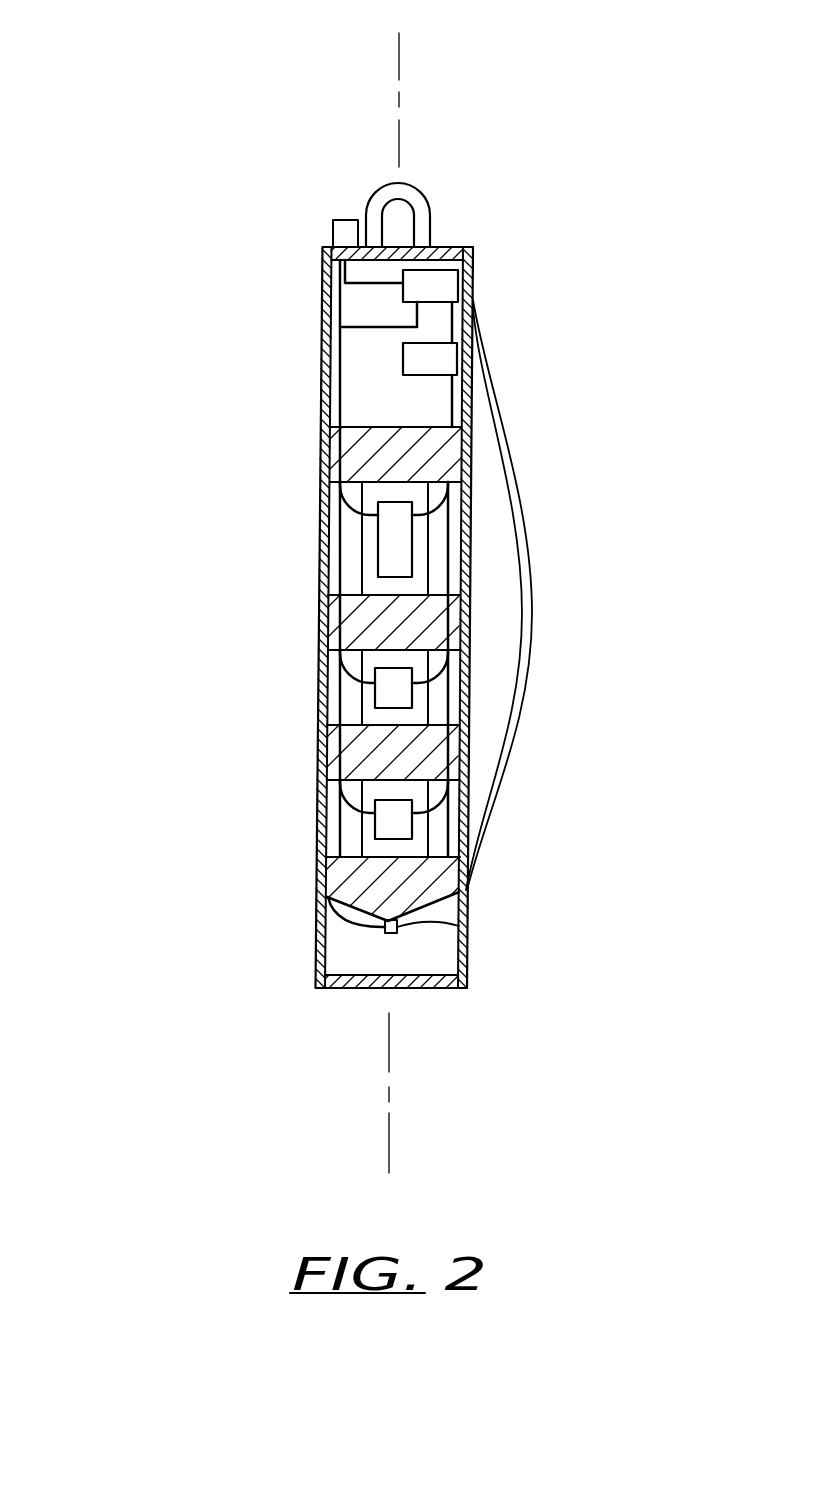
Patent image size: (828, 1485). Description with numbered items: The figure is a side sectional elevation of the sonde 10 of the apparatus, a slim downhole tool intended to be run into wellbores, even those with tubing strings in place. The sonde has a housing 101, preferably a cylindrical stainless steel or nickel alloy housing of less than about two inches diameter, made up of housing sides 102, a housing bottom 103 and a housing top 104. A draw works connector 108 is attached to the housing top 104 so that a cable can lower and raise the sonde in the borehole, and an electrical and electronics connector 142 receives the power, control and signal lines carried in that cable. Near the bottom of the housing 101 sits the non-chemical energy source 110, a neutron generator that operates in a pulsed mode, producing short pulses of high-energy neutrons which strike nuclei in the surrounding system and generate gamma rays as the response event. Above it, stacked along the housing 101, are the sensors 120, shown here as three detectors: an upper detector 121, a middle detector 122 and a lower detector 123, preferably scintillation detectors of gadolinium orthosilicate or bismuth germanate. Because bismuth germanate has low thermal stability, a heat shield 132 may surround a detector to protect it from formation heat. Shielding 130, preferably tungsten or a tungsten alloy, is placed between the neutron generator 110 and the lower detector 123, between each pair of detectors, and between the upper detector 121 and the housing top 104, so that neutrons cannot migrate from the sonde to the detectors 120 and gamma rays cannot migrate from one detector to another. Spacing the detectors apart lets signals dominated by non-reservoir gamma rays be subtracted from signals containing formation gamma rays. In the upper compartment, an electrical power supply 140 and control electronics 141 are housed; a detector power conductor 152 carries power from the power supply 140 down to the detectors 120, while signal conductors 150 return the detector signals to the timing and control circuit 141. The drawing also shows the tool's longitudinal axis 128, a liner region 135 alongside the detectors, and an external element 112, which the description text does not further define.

The sonde 10 is at (318, 287).
The housing 101 is at (315, 650).
The housing sides 102 is at (320, 687).
The housing bottom 103 is at (398, 992).
The housing top 104 is at (442, 247).
The draw works connector 108 is at (407, 188).
The non-chemical energy source 110 is at (459, 927).
The flexible cable 112 is at (532, 615).
The sensors 120 is at (415, 568).
The upper detector 121 is at (407, 543).
The middle detector 122 is at (380, 698).
The lower detector 123 is at (378, 826).
The longitudinal axis 128 is at (397, 60).
The shielding 130 is at (350, 453).
The heat shield 132 is at (355, 841).
The liner 135 is at (352, 542).
The electrical power supply 140 is at (455, 290).
The control electronics 141 is at (452, 363).
The electrical and electronics connector 142 is at (343, 218).
The signal conductors 150 is at (447, 412).
The detector power conductor 152 is at (335, 347).